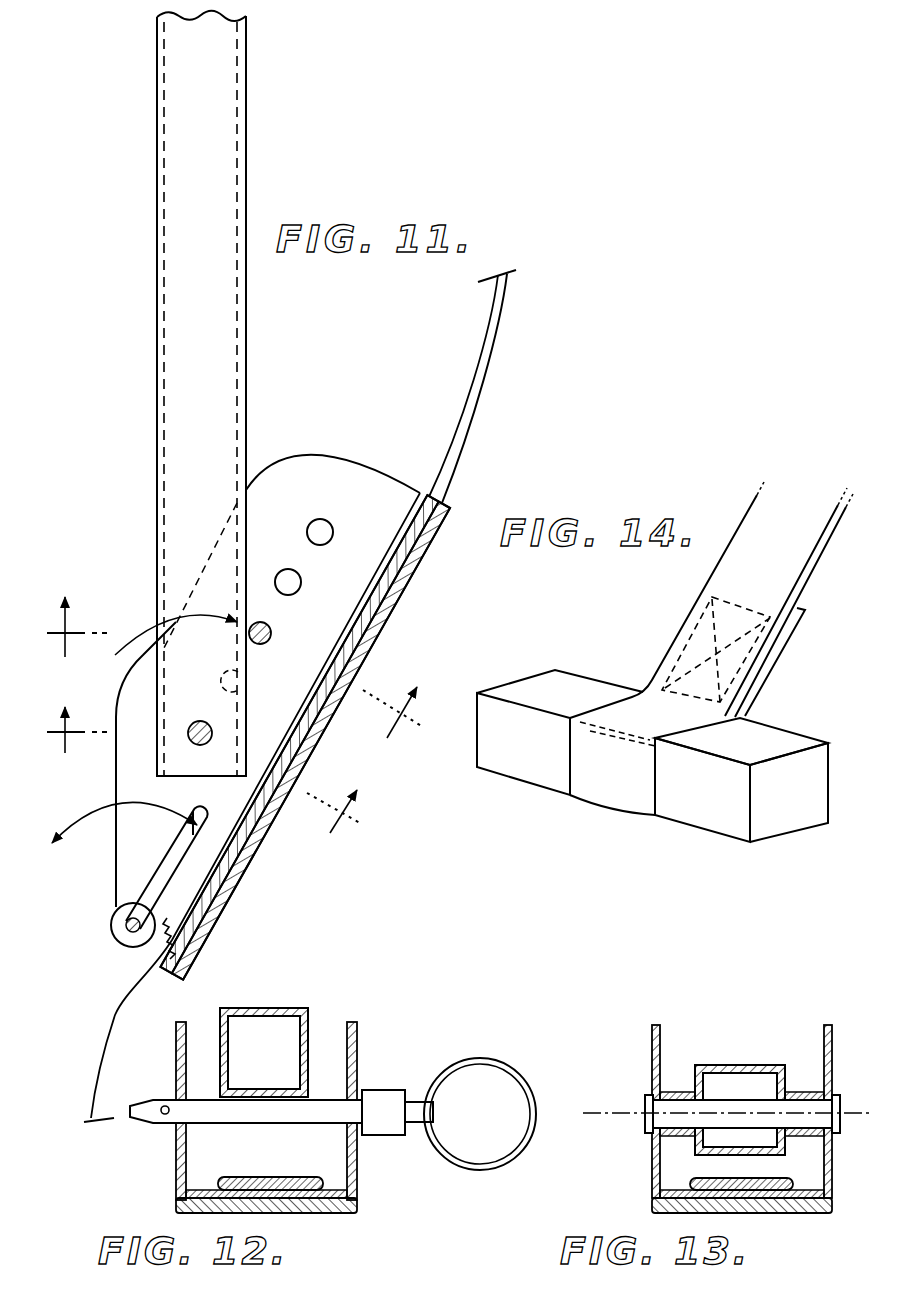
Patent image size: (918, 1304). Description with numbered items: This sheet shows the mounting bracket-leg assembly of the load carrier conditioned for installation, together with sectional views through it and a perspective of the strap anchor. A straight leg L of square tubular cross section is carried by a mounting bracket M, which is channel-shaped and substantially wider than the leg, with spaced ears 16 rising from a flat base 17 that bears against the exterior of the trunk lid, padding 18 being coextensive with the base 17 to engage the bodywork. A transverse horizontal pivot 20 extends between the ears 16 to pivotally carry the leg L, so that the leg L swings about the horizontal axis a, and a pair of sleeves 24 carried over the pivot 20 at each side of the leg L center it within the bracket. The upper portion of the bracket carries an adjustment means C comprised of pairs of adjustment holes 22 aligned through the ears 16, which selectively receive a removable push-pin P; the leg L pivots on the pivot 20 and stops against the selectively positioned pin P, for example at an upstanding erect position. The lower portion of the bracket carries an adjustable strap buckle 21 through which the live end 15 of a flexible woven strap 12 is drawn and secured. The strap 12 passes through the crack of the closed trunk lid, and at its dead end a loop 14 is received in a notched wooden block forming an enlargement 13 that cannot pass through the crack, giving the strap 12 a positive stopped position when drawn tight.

In FIG. 11, the leg L is at (160, 262).
In FIG. 12, the leg L is at (283, 1005).
In FIG. 13, the leg L is at (739, 1058).
In FIG. 11, the mounting bracket M is at (331, 448).
In FIG. 12, the mounting bracket M is at (354, 1020).
In FIG. 13, the mounting bracket M is at (658, 1020).
In FIG. 11, the adjustment means C is at (275, 633).
In FIG. 12, the adjustment means C is at (374, 1088).
In FIG. 11, the pin P is at (263, 645).
In FIG. 12, the pin P is at (325, 1120).
In FIG. 13, the transverse horizontal axis a is at (612, 1113).
In FIG. 11, the strap 12 is at (126, 980).
In FIG. 12, the strap 12 is at (263, 1173).
In FIG. 13, the strap 12 is at (800, 1180).
In FIG. 14, the strap 12 is at (753, 568).
In FIG. 11, the enlargement 13 is at (192, 786).
In FIG. 14, the enlargement 13 is at (688, 812).
In FIG. 14, the loop 14 is at (617, 790).
In FIG. 11, the live end 15 is at (486, 383).
In FIG. 11, the ears 16 is at (350, 473).
In FIG. 12, the ears 16 is at (175, 1152).
In FIG. 13, the ears 16 is at (652, 1052).
In FIG. 11, the base 17 is at (400, 578).
In FIG. 12, the base 17 is at (335, 1190).
In FIG. 13, the base 17 is at (660, 1190).
In FIG. 11, the padding 18 is at (400, 605).
In FIG. 12, the padding 18 is at (320, 1212).
In FIG. 13, the padding 18 is at (790, 1213).
In FIG. 11, the pivot 20 is at (190, 738).
In FIG. 11, the strap buckle 21 is at (157, 877).
In FIG. 11, the adjustment holes 22 is at (333, 527).
In FIG. 12, the adjustment holes 22 is at (172, 1100).
In FIG. 13, the sleeves 24 is at (800, 1092).